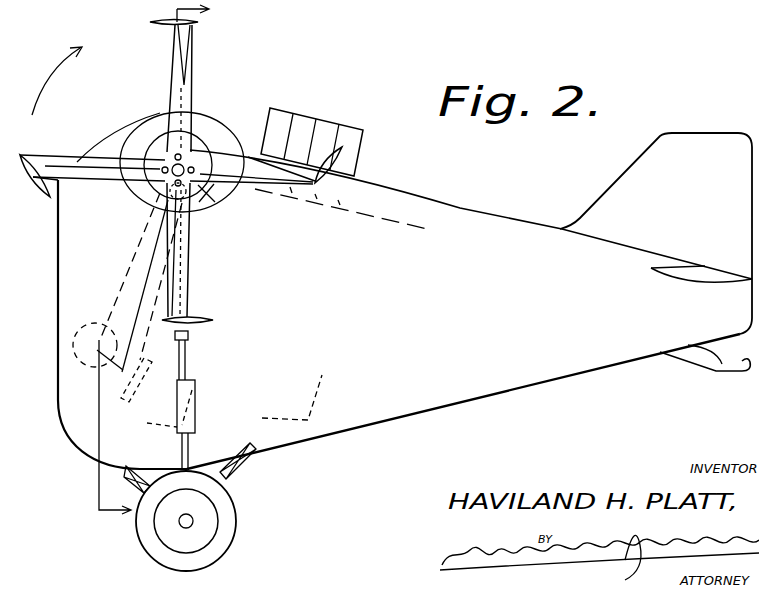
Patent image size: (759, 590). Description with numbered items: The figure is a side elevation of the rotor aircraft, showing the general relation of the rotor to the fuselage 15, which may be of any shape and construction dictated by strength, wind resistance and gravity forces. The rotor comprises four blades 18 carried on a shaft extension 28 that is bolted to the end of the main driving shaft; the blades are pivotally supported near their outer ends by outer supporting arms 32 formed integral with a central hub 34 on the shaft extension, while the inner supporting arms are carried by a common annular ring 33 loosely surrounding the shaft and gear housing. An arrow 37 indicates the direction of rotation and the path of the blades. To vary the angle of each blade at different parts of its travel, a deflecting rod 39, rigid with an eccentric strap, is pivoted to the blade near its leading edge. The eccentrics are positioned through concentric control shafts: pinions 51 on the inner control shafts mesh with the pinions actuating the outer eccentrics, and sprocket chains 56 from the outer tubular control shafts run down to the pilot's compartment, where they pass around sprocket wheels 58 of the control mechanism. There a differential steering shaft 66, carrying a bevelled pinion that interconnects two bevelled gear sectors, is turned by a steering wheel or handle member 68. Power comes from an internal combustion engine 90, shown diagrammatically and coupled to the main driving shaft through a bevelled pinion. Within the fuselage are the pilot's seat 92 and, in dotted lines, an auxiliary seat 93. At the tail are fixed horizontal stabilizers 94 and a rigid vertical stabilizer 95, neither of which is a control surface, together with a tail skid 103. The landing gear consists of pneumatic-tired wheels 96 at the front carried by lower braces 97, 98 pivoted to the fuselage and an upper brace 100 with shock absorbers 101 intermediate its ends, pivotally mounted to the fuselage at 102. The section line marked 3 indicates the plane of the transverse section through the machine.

The section line 3- 3 is at (143, 260).
The fuselage 15 is at (392, 309).
The blades 18 is at (198, 22).
The shaft extension 28 is at (158, 130).
The outer supporting arms 32 is at (183, 86).
The annular hub or ring 33 is at (200, 127).
The central hub 34 is at (212, 200).
The arrow 37 is at (71, 72).
The deflecting rod 39 is at (193, 50).
The pinions 51 is at (163, 198).
The sprocket chains 56 is at (138, 245).
The sprocket wheels 58 is at (97, 324).
The differential or steering shaft 66 is at (130, 357).
The steering wheel or handle member 68 is at (130, 350).
The internal combustion engine 90 is at (307, 130).
The pilot's seat 92 is at (158, 414).
The auxiliary seat 93 is at (292, 397).
The horizontal stabilizers 94 is at (697, 272).
The vertical stabilizer 95 is at (656, 233).
The pneumatic-tired wheels 96 is at (222, 540).
The lower brace 97 is at (135, 487).
The lower brace 98 is at (236, 482).
The upper brace 100 is at (183, 452).
The shock absorbers 101 is at (192, 391).
The pivotal mounting 102 is at (188, 335).
The tail skid 103 is at (712, 366).